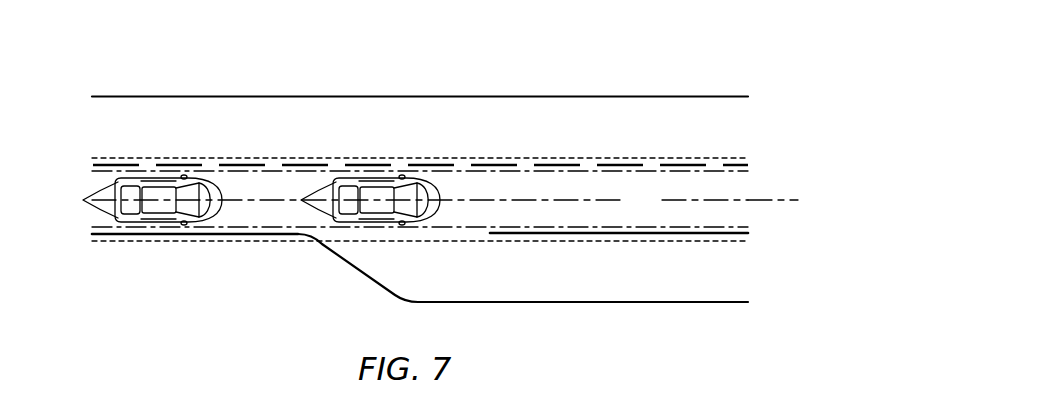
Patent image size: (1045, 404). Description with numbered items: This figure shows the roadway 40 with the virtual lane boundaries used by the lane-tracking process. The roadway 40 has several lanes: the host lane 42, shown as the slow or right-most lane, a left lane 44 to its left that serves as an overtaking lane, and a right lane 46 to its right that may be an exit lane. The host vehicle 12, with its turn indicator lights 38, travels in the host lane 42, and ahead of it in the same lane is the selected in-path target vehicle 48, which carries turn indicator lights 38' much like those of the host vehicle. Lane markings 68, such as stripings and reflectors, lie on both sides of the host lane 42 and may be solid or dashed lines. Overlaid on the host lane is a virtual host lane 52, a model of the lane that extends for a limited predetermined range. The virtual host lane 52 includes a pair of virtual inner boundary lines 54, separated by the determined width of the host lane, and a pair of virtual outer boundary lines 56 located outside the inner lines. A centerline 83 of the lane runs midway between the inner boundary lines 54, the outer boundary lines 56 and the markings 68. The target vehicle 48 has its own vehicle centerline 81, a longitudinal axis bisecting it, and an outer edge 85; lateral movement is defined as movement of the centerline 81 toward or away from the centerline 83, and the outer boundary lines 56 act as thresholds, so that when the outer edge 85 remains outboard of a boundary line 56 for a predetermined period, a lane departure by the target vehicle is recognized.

The roadway 40 is at (690, 91).
The left lane 44 is at (733, 132).
The host lane 42 is at (748, 177).
The right lane 46 is at (733, 278).
The virtual outer boundary lines 56 is at (628, 157).
The lane markings 68 is at (242, 233).
The virtual host lane 52 is at (652, 213).
The virtual inner boundary lines 54 is at (572, 226).
The centerline of lane 83 is at (780, 203).
The vehicle 12 is at (165, 179).
The turn indicator lights 38 is at (89, 200).
The turn indicator lights 38' is at (304, 200).
The target vehicle 48 is at (385, 182).
The outer edge 85 is at (373, 177).
The vehicle centerline 81 is at (443, 200).